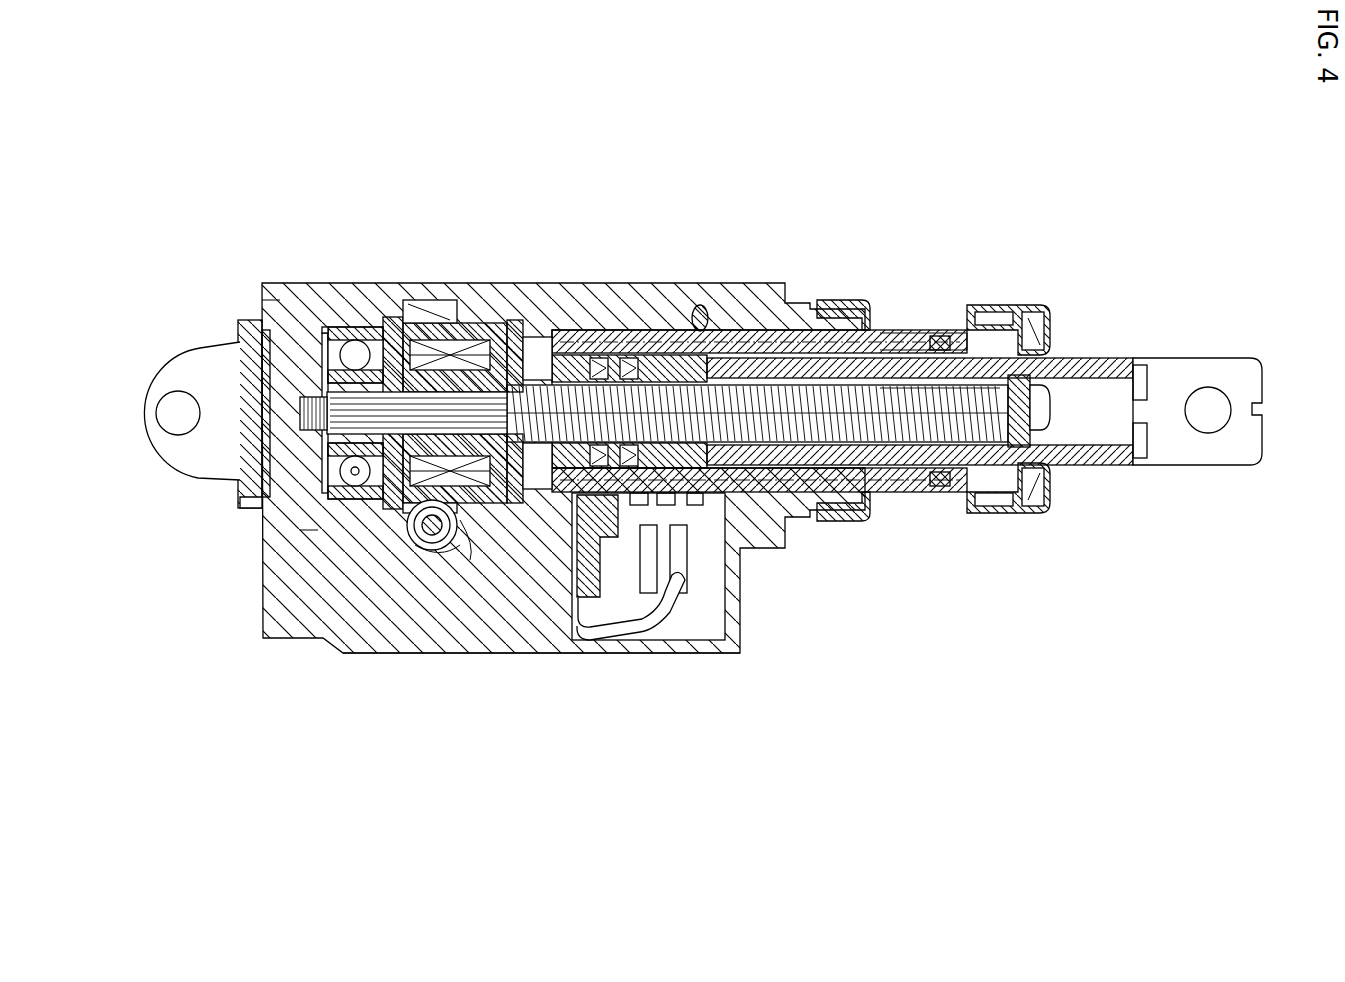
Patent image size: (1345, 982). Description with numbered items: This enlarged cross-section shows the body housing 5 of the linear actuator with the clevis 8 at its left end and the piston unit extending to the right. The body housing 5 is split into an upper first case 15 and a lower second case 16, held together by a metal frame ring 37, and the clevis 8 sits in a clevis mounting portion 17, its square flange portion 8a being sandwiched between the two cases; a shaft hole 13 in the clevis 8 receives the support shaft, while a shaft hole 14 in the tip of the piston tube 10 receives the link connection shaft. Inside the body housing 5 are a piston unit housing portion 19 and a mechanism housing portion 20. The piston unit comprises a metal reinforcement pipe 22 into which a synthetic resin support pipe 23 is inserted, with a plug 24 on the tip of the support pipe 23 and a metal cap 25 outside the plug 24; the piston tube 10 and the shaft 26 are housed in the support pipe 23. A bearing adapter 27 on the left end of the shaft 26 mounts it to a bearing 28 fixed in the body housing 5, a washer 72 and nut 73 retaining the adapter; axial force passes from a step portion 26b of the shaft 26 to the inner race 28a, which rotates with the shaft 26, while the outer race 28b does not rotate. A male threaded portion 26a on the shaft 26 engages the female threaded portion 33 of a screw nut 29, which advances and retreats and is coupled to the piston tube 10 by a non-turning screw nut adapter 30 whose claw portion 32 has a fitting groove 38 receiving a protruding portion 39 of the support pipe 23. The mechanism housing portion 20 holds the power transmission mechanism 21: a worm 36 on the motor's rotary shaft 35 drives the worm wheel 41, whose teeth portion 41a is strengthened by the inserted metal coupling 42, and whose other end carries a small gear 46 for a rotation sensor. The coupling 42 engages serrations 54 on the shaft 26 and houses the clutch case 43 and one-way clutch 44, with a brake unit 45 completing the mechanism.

The body housing 5 is at (470, 660).
The clevis 8 is at (173, 372).
The flange portion 8a is at (268, 293).
The piston tube 10 is at (1126, 358).
The shaft hole 13 is at (168, 427).
The shaft hole 14 is at (1212, 420).
The first case 15 is at (560, 650).
The second case 16 is at (775, 282).
The clevis mounting portion 17 is at (240, 492).
The piston unit housing portion 19 is at (737, 332).
The mechanism housing portion 20 is at (528, 345).
The power transmission mechanism 21 is at (514, 338).
The reinforcement pipe 22 is at (917, 350).
The support pipe 23 is at (939, 350).
The plug 24 is at (1025, 308).
The cap 25 is at (1050, 320).
The shaft 26 is at (1048, 412).
The male threaded portion 26a is at (897, 492).
The step portion 26b is at (465, 396).
The bearing adapter 27 is at (307, 530).
The bearing 28 is at (353, 513).
The inner race 28a is at (338, 338).
The outer race 28b is at (332, 512).
The screw nut 29 is at (699, 505).
The screw nut adapter 30 is at (560, 358).
The claw portion 32 is at (628, 356).
The female threaded portion 33 is at (687, 585).
The rotary shaft 35 is at (473, 545).
The worm 36 is at (437, 545).
The frame ring 37 is at (845, 523).
The fitting groove 38 is at (600, 356).
The protruding portion 39 is at (696, 310).
The worm wheel 41 is at (515, 540).
The teeth portion 41a is at (430, 536).
The coupling 42 is at (444, 312).
The clutch case 43 is at (422, 312).
The one-way clutch 44 is at (512, 340).
The brake unit 45 is at (390, 325).
The small gear 46 is at (455, 530).
The serrations 54 is at (324, 335).
The washer 72 is at (318, 475).
The nut 73 is at (258, 322).